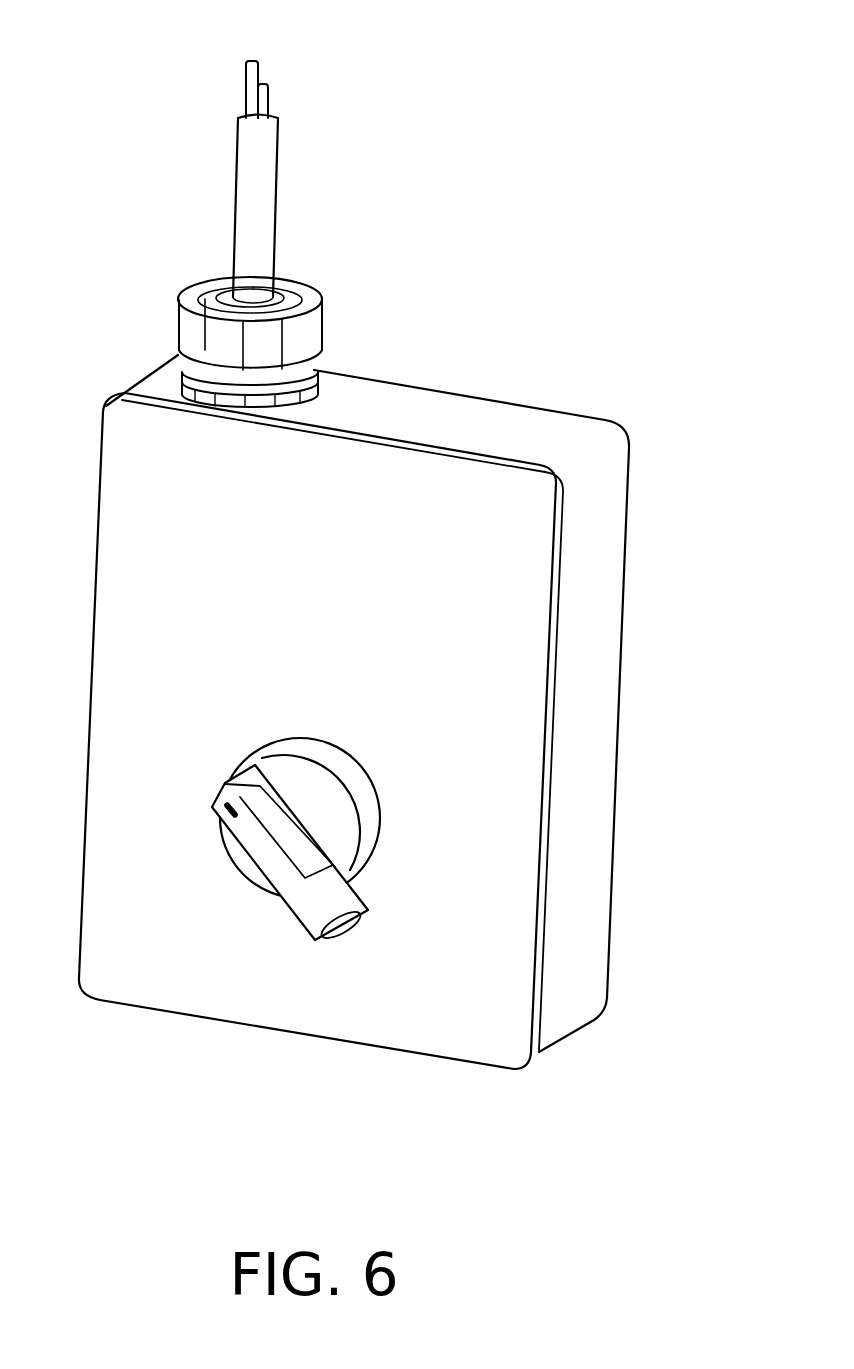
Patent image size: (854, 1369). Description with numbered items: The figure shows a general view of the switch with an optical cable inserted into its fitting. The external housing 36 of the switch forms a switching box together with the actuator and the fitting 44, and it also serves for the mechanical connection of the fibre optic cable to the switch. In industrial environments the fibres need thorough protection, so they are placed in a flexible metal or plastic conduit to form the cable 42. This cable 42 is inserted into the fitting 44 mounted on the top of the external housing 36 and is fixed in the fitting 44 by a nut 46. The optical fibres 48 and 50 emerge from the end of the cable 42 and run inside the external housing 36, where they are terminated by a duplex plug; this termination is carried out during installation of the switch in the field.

The external housing 36 is at (605, 588).
The cable 42 is at (257, 233).
The fitting 44 is at (302, 287).
The nut 46 is at (213, 348).
The optical fibre 48 is at (248, 97).
The optical fibre 50 is at (258, 107).